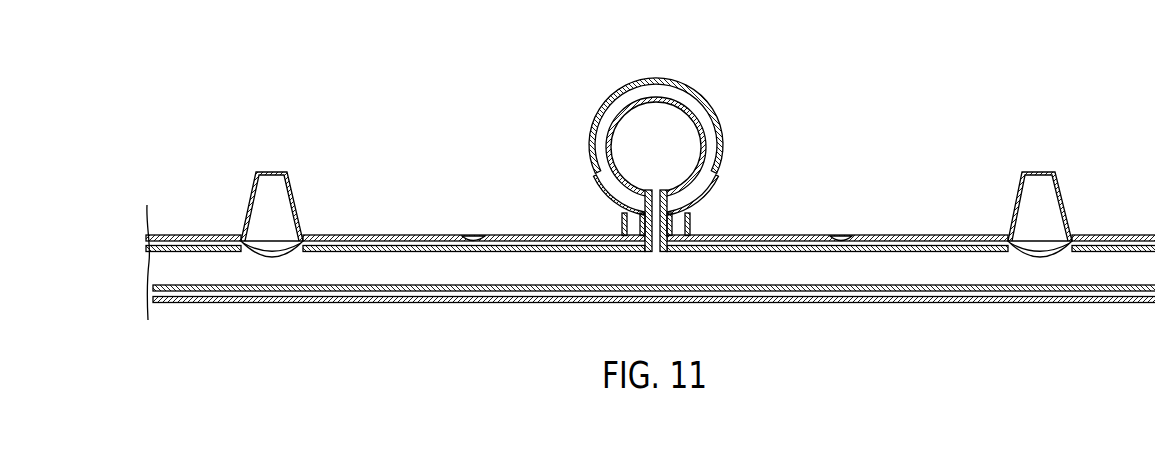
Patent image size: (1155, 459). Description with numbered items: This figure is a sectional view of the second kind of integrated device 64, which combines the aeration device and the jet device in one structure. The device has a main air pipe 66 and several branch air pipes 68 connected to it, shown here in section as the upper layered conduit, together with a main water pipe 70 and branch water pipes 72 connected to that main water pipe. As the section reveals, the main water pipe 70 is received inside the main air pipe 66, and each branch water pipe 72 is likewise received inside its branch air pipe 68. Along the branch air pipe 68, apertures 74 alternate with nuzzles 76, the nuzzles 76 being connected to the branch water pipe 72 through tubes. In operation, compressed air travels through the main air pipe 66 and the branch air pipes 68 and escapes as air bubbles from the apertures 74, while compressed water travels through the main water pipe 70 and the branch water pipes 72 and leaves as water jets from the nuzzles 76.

The integrated device 64 is at (901, 176).
The main air pipe 66 is at (667, 79).
The branch air pipe 68 is at (175, 235).
The main water pipe 70 is at (693, 117).
The branch water pipe 72 is at (357, 291).
The aperture 74 is at (471, 236).
The nuzzle 76 is at (295, 193).